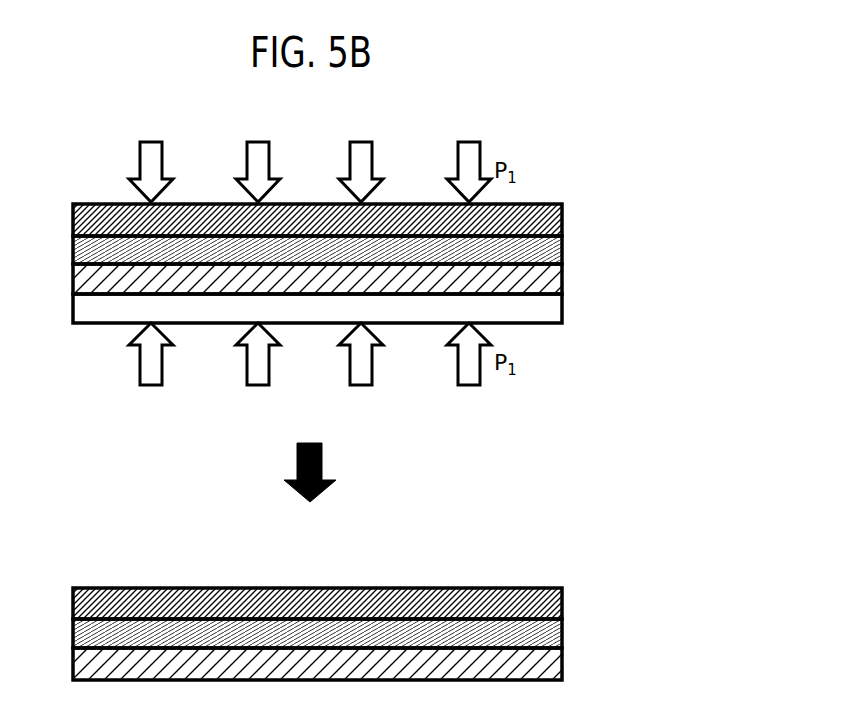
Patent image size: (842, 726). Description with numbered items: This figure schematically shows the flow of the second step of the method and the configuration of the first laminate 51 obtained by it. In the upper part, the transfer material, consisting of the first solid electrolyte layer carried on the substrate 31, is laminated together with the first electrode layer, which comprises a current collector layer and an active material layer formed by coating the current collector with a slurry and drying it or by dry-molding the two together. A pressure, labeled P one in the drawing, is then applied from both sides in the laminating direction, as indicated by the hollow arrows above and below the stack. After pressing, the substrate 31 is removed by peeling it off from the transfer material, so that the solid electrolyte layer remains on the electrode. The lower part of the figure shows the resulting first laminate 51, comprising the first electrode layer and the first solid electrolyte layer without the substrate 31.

The substrate 31 is at (562, 310).
The first laminate 51 is at (329, 566).